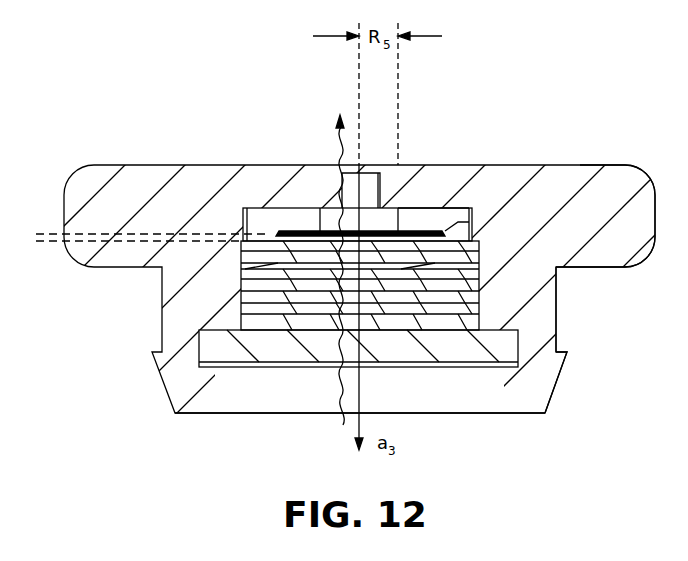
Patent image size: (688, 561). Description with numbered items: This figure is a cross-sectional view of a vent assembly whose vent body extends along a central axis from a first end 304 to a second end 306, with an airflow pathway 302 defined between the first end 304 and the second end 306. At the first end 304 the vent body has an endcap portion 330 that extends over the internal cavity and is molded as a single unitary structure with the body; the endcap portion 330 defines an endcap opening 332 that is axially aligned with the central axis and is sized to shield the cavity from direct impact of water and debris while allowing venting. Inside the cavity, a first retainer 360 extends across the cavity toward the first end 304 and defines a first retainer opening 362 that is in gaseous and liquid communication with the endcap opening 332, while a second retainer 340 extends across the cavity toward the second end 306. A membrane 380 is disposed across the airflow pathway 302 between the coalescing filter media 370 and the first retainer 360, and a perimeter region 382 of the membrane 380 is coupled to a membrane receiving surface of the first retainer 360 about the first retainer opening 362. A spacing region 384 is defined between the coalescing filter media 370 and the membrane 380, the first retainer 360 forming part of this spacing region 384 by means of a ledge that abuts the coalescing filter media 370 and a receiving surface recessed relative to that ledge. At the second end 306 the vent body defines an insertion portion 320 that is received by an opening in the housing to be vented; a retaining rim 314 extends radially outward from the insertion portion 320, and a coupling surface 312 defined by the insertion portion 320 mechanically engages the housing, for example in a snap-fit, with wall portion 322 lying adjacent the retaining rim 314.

The airflow pathway 302 is at (343, 426).
The first end 304 is at (330, 203).
The second end 306 is at (453, 402).
The coupling surface 312 is at (578, 372).
The retaining rim 314 is at (582, 268).
The insertion portion 320 is at (137, 348).
The housing wall 322 is at (548, 297).
The endcap portion 330 is at (567, 182).
The endcap opening 332 is at (369, 155).
The second retainer 340 is at (215, 352).
The first retainer 360 is at (473, 212).
The first retainer opening 362 is at (388, 207).
The coalescing filter media 370 is at (480, 257).
The membrane 380 is at (283, 230).
The perimeter region 382 is at (455, 218).
The spacing region 384 is at (43, 276).